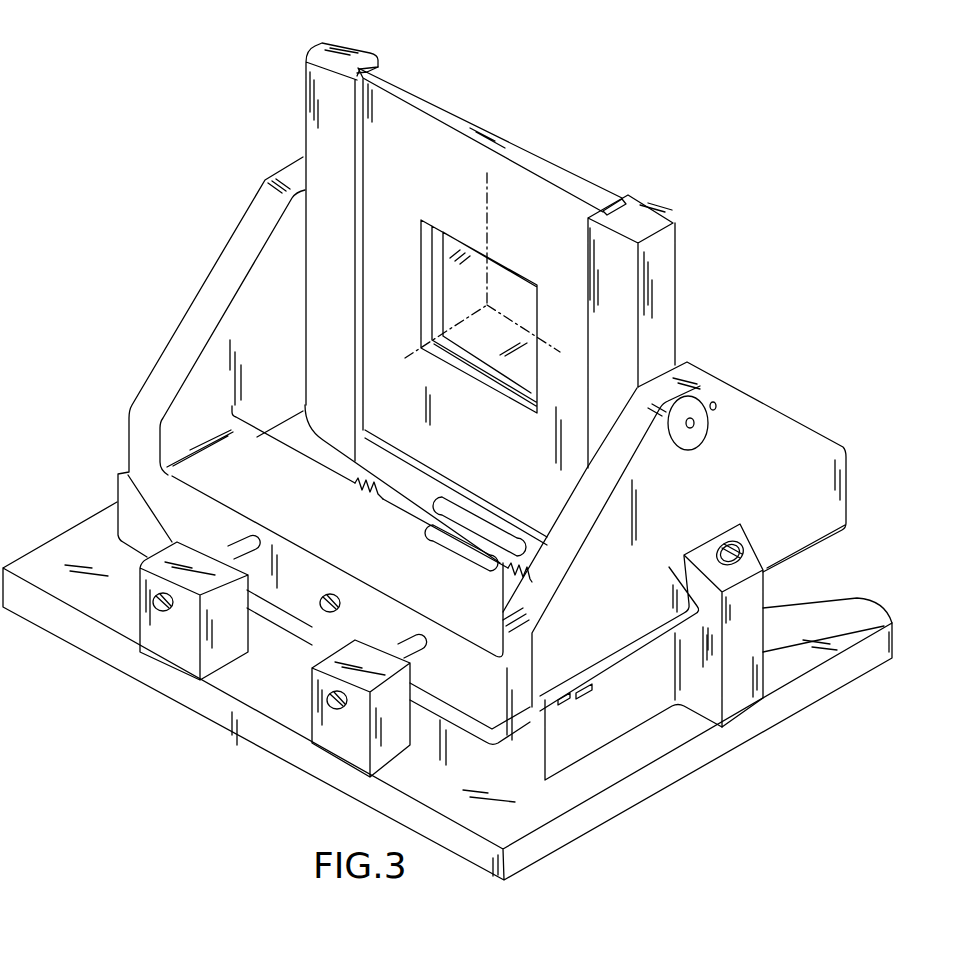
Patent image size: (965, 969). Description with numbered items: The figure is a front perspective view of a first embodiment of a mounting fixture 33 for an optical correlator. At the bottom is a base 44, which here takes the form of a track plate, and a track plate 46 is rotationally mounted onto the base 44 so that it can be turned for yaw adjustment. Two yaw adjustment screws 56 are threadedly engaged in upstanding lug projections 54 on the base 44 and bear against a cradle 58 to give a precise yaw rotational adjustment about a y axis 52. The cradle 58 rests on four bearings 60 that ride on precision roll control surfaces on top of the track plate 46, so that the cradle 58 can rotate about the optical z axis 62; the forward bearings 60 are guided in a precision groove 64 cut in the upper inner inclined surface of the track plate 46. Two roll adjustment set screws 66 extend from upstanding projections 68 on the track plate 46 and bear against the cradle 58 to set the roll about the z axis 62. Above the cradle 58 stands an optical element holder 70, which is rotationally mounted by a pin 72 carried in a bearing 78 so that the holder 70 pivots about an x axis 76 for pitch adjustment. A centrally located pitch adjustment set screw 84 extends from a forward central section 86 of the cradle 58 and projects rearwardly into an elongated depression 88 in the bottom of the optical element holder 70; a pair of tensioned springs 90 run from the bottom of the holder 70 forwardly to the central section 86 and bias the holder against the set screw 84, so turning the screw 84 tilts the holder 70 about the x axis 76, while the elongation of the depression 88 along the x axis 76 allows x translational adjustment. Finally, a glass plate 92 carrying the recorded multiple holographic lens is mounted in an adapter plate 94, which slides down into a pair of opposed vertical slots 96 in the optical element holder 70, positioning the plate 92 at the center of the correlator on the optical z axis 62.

The mounting fixture 33 is at (742, 254).
The base 44 is at (514, 834).
The track plate 46 is at (659, 702).
The y axis 52 is at (485, 190).
The upstanding lug projections 54 is at (245, 641).
The yaw adjustment screws 56 is at (157, 610).
The cradle 58 is at (754, 496).
The bearings 60 is at (790, 562).
The optical z axis 62 is at (369, 372).
The precision groove 64 is at (590, 682).
The roll adjustment set screws 66 is at (745, 548).
The upstanding projections 68 is at (763, 610).
The optical element holder 70 is at (675, 307).
The pin 72 is at (697, 423).
The x axis 76 is at (556, 352).
The bearing 78 is at (714, 404).
The pitch adjustment set screw 84 is at (323, 608).
The forward central section 86 is at (320, 527).
The depression 88 is at (502, 523).
The tensioned springs 90 is at (352, 485).
The glass plate 92 is at (482, 301).
The adapter plate 94 is at (427, 157).
The vertical slots 96 is at (372, 71).